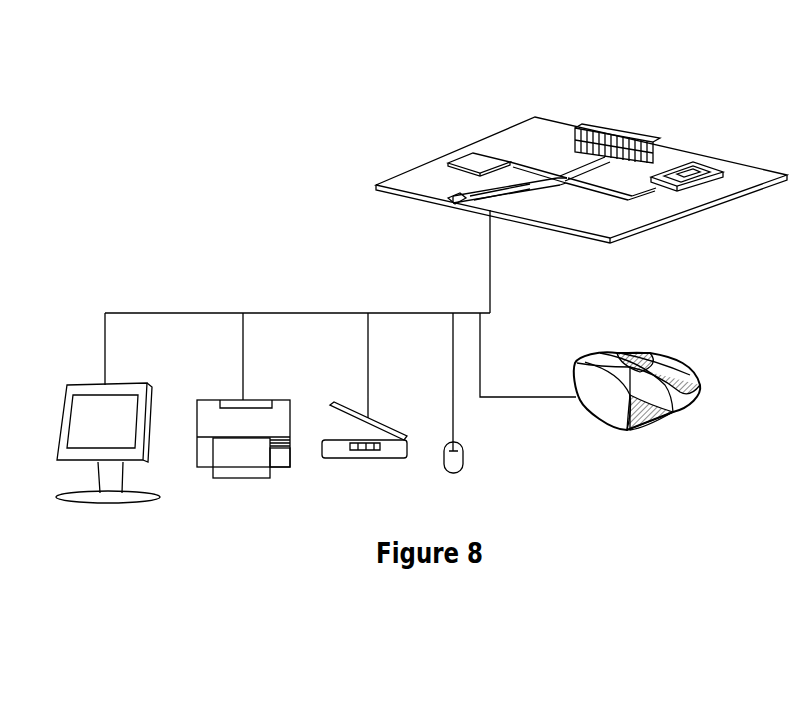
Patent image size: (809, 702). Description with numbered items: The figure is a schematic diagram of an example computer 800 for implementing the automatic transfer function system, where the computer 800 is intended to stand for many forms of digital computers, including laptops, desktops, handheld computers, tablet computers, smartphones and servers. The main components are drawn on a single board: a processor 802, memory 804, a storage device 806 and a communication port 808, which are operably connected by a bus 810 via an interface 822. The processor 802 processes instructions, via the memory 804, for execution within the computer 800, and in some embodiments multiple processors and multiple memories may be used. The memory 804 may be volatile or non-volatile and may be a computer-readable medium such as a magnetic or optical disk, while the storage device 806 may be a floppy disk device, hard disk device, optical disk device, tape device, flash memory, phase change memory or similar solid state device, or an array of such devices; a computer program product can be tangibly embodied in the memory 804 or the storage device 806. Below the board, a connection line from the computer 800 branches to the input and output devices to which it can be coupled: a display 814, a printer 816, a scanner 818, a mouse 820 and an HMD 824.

The computer 800 is at (673, 80).
The processor 802 is at (467, 163).
The memory 804 is at (610, 130).
The storage device 806 is at (720, 200).
The communication port 808 is at (563, 184).
The bus 810 is at (660, 188).
The display 814 is at (128, 505).
The printer 816 is at (240, 482).
The scanner 818 is at (388, 460).
The mouse 820 is at (465, 455).
The interface 822 is at (457, 210).
The HMD 824 is at (660, 423).